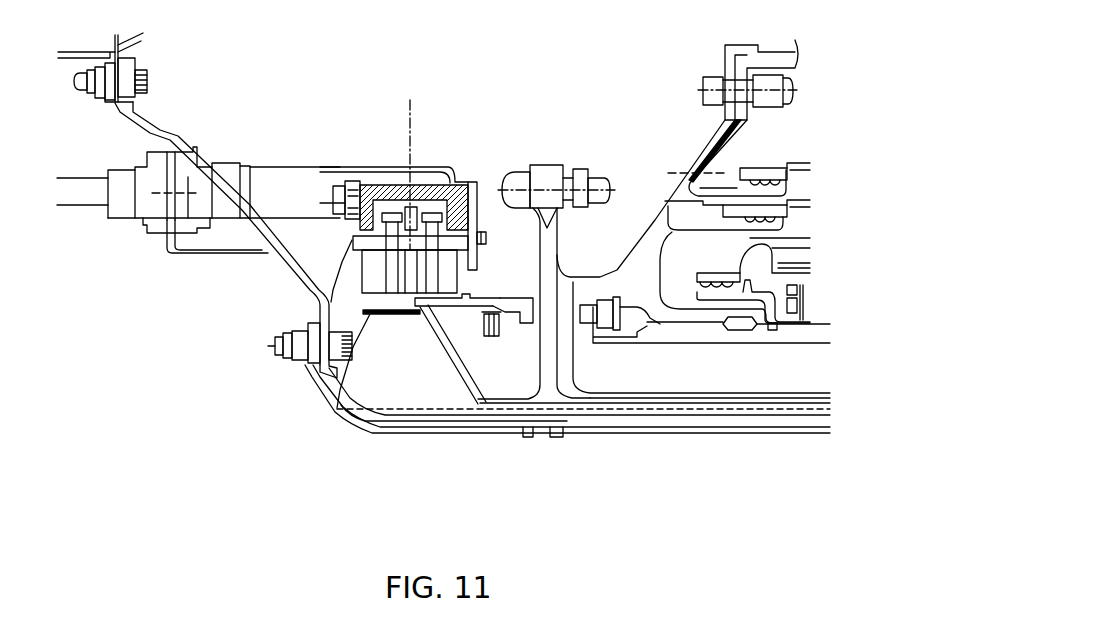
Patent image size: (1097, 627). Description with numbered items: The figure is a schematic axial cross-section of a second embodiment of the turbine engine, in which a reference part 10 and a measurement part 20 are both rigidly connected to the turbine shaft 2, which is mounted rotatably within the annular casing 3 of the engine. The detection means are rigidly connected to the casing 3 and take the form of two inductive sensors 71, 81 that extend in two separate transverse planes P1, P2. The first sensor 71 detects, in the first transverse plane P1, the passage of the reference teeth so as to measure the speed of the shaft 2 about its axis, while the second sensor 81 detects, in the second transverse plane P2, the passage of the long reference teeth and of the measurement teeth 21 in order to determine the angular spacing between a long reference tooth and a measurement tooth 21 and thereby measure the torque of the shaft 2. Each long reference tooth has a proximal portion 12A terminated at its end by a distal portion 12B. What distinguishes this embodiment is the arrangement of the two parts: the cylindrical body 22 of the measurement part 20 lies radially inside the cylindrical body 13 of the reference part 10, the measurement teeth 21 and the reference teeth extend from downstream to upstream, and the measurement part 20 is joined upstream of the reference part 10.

The turbine shaft 2 is at (672, 393).
The annular casing 3 is at (283, 270).
The reference part 10 is at (483, 311).
The proximal portion 12A is at (447, 303).
The distal portion 12B is at (352, 372).
The cylindrical body of the reference part 13 is at (493, 300).
The measurement part 20 is at (440, 347).
The measurement teeth 21 is at (400, 318).
The cylindrical body of the measurement part 22 is at (652, 412).
The inductive sensor 71 is at (362, 275).
The inductive sensor 81 is at (452, 260).
The first transverse plane P1 is at (432, 200).
The second transverse plane P2 is at (388, 200).